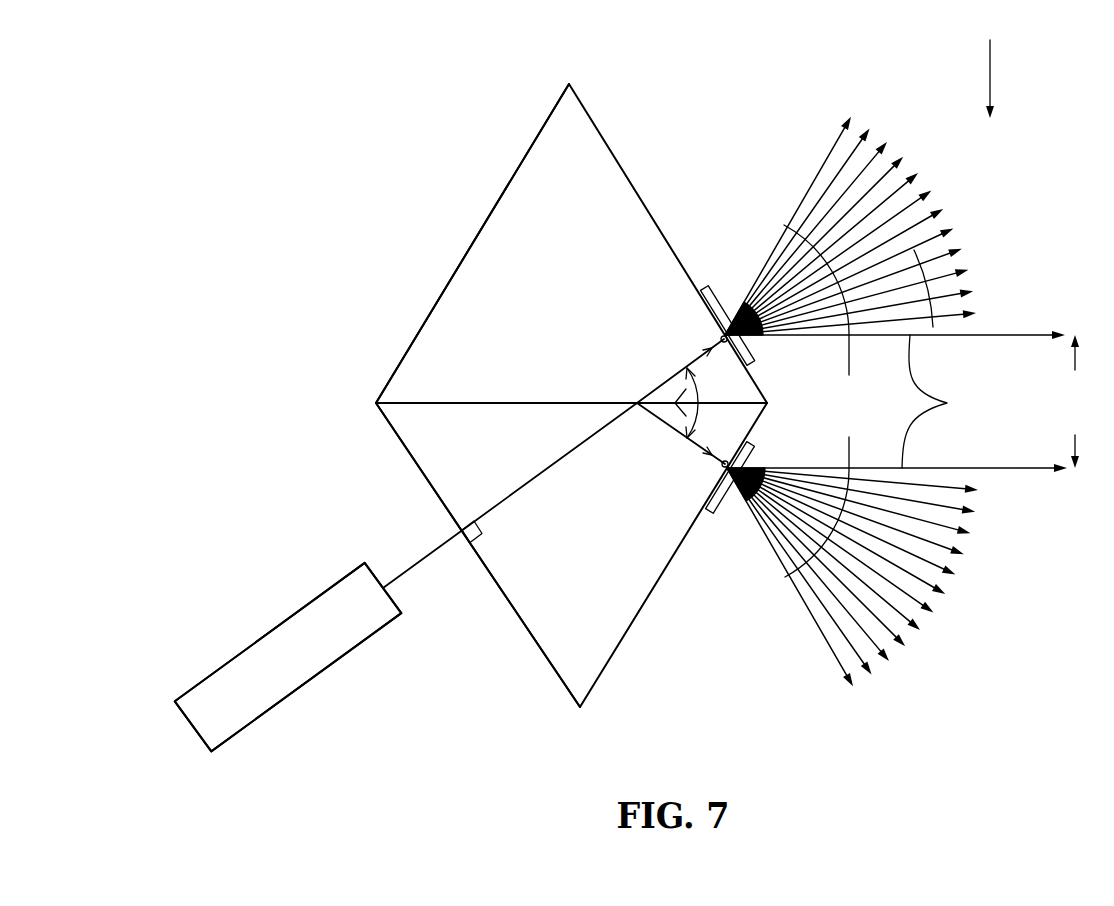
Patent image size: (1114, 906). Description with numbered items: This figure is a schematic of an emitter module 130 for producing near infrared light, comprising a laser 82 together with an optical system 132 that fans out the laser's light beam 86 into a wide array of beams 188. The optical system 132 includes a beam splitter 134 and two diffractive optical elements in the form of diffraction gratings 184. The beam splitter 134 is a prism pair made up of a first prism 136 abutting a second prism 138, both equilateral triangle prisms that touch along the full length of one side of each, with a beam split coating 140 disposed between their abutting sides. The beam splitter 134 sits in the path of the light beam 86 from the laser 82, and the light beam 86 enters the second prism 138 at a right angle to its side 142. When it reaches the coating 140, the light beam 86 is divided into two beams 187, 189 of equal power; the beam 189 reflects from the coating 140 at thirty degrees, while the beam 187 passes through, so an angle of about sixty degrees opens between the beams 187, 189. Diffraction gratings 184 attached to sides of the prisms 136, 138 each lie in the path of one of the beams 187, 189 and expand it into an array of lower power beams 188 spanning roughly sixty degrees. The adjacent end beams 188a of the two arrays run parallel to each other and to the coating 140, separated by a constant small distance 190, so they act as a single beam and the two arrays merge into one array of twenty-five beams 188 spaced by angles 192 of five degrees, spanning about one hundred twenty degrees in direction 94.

The emitter module 130 is at (302, 161).
The beam splitter 134 is at (457, 160).
The first prism 136 is at (440, 298).
The second prism 138 is at (541, 649).
The beam split coating 140 is at (527, 403).
The beam 187 is at (657, 387).
The beam 189 is at (662, 421).
The diffraction gratings 184 is at (719, 295).
The beams 188 is at (823, 157).
The end beams 188a is at (959, 401).
The distance 190 is at (1088, 401).
The angles 192 is at (967, 278).
The direction 94 is at (990, 66).
The laser 82 is at (300, 628).
The optical system 132 is at (365, 664).
The light beam 86 is at (403, 573).
The side 142 is at (477, 558).